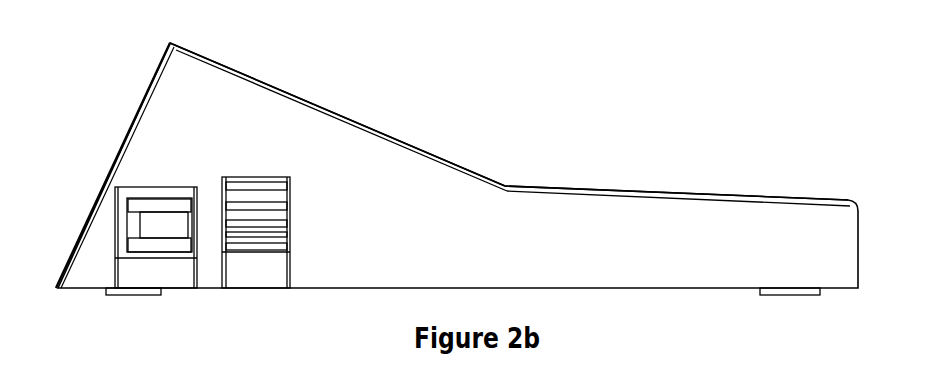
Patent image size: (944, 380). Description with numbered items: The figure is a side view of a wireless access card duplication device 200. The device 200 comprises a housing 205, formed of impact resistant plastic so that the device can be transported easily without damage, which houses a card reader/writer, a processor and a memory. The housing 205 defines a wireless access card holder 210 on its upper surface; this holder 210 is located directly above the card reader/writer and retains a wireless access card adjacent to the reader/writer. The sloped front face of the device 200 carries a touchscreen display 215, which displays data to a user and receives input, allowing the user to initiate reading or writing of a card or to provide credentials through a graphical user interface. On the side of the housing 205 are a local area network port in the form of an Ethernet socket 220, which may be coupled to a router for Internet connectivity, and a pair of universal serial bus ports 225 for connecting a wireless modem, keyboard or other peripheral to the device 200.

The wireless access card duplication device 200 is at (95, 98).
The housing 205 is at (640, 258).
The wireless access card holder 210 is at (720, 178).
The touchscreen display 215 is at (350, 100).
The RJ-45 Ethernet socket 220 is at (160, 187).
The universal serial bus (USB) ports 225 is at (293, 218).